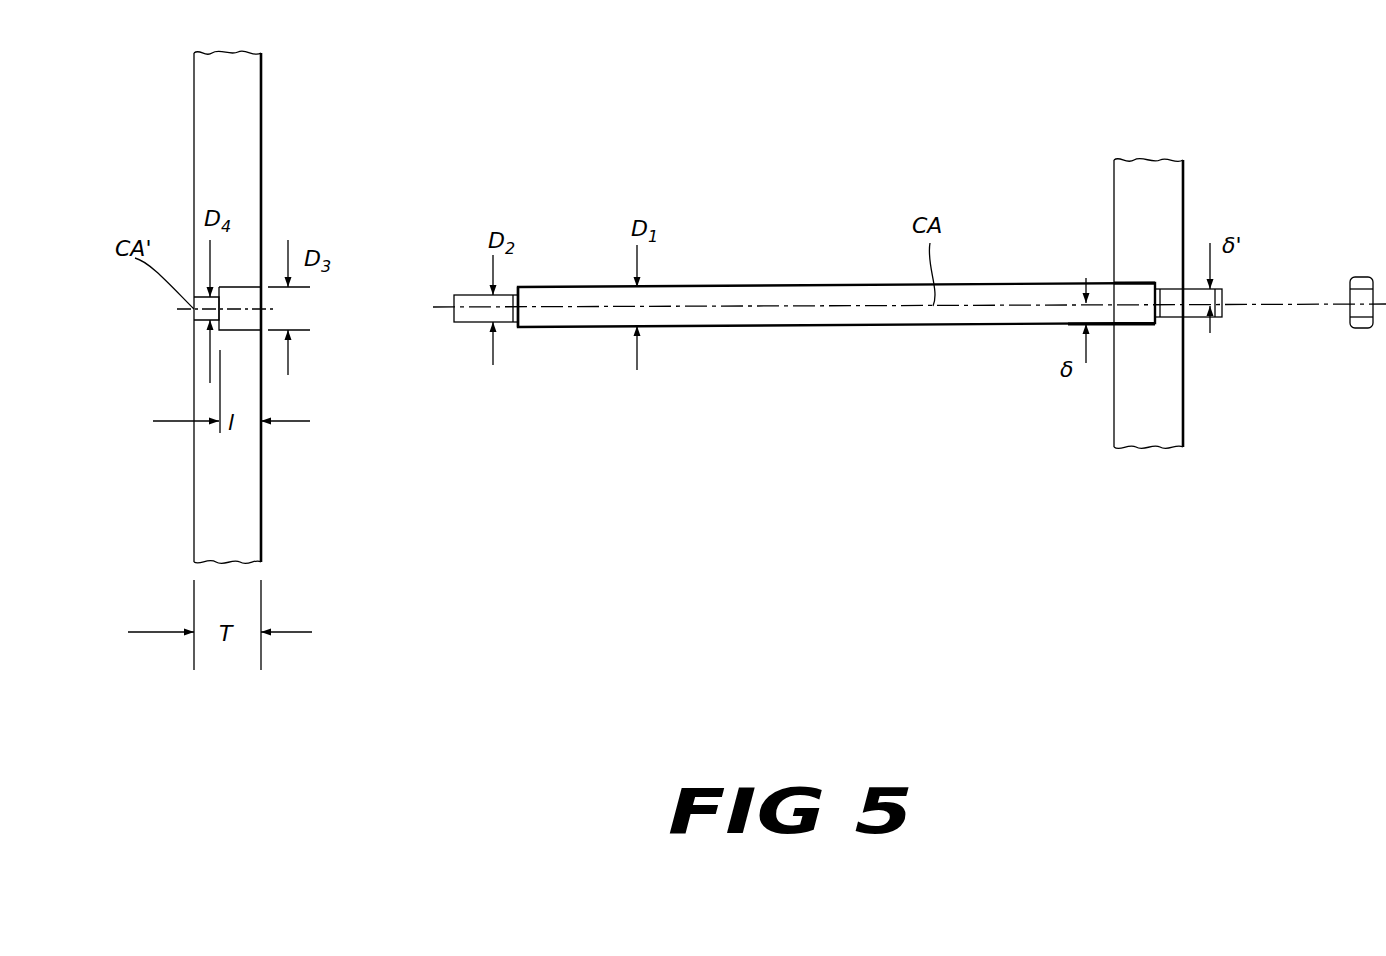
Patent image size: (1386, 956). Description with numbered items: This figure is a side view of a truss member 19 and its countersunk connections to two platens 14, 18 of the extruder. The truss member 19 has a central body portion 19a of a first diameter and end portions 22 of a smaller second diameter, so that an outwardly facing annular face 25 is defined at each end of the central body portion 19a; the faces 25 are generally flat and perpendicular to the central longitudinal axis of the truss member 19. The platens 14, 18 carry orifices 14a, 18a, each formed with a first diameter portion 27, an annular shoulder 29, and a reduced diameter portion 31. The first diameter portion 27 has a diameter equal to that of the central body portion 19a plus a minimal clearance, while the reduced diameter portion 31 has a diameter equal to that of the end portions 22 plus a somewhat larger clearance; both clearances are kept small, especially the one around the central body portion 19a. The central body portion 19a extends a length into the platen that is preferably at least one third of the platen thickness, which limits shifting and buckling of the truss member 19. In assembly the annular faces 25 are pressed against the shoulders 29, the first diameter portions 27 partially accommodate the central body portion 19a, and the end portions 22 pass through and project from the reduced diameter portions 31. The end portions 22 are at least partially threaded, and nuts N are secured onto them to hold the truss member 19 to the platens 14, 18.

The platen 14 is at (1168, 205).
The orifice 14a is at (1183, 323).
The platen 18 is at (243, 128).
The orifice 18a is at (194, 297).
The truss member 19 is at (777, 287).
The central body portion 19a is at (685, 287).
The end portion 22 is at (478, 296).
The annular face 25 is at (518, 327).
The first diameter portion 27 is at (238, 318).
The annular shoulder 29 is at (247, 287).
The reduced diameter portion 31 is at (194, 312).
The nut N is at (1362, 277).